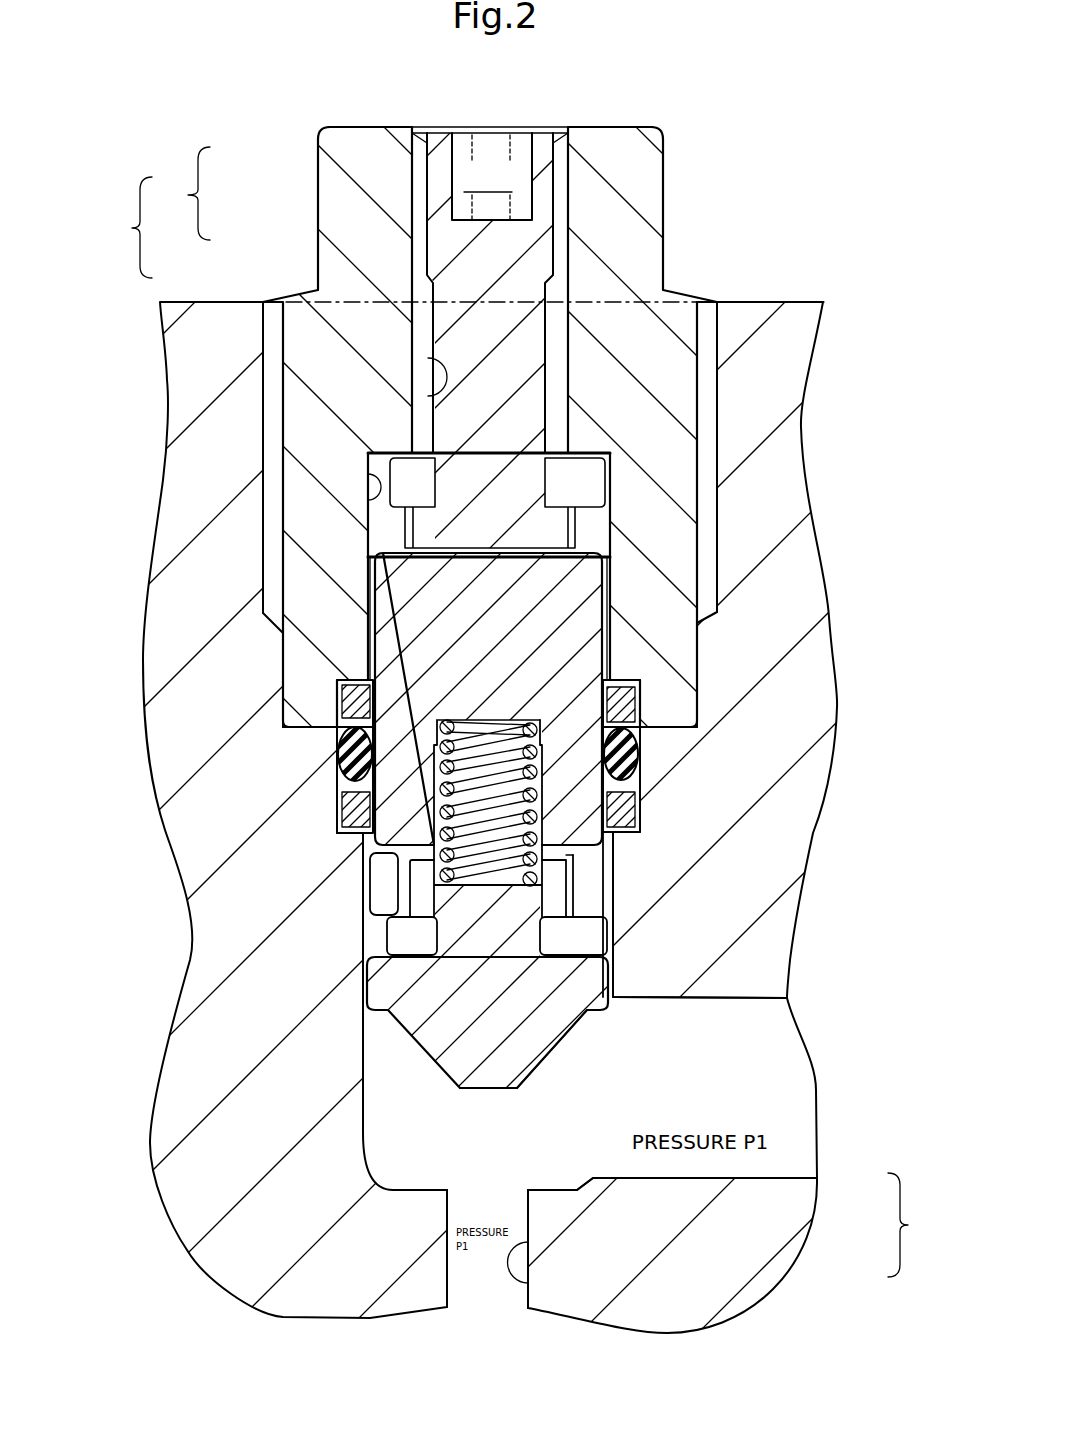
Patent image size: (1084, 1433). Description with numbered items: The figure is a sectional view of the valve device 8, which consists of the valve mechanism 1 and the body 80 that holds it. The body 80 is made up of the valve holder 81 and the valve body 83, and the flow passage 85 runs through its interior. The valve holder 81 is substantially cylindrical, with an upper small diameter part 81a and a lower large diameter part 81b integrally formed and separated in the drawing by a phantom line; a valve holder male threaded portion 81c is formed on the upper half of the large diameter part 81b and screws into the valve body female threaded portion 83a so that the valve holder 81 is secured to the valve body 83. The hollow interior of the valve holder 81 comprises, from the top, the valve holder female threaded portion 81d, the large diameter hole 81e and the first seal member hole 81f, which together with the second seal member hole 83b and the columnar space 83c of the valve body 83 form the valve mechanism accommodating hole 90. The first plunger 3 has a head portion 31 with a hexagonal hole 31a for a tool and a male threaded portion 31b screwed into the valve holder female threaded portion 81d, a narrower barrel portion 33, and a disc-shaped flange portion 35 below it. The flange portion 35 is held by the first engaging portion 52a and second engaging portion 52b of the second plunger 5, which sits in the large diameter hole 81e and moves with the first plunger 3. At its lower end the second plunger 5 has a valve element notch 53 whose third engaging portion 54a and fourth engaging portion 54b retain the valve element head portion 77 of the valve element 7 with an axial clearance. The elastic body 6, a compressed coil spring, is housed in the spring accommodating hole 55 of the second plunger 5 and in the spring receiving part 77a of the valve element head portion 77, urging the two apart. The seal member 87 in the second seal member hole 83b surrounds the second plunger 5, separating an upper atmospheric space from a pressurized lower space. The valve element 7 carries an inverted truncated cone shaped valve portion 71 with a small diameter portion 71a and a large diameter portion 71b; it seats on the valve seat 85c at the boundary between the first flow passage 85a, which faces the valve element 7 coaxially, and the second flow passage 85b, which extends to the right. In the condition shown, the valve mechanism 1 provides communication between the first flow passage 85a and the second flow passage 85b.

The valve mechanism 1 is at (497, 106).
The first plunger 3 is at (540, 143).
The second plunger 5 is at (547, 570).
The elastic body 6 is at (643, 797).
The valve element 7 is at (612, 983).
The valve device 8 is at (821, 117).
The head portion 31 is at (570, 155).
The hexagonal hole 31a is at (492, 176).
The male threaded portion 31b is at (562, 215).
The barrel portion 33 is at (527, 340).
The flange portion 35 is at (560, 480).
The first engaging portion 52a is at (617, 472).
The second engaging portion 52b is at (707, 567).
The valve element notch 53 is at (367, 883).
The third engaging portion 54a is at (643, 813).
The fourth engaging portion 54b is at (612, 943).
The spring accommodating hole 55 is at (353, 843).
The valve portion 71 is at (547, 1063).
The small diameter portion 71a is at (503, 1090).
The large diameter portion 71b is at (600, 1030).
The valve element head portion 77 is at (612, 887).
The spring receiving part 77a is at (612, 850).
The body 80 is at (122, 227).
The valve holder 81 is at (542, 716).
The small diameter part 81a is at (328, 210).
The large diameter part 81b is at (315, 345).
The valve holder male threaded portion 81c is at (273, 439).
The valve holder female threaded portion 81d is at (425, 398).
The large diameter hole 81e is at (366, 488).
The first seal member hole 81f is at (350, 676).
The valve body 83 is at (228, 327).
The valve body female threaded portion 83a is at (607, 527).
The second seal member hole 83b is at (342, 800).
The columnar space 83c is at (612, 917).
The flow passage 85 is at (670, 1225).
The first flow passage 85a is at (528, 1267).
The second flow passage 85b is at (787, 1145).
The valve seat 85c is at (453, 1180).
The seal member 87 is at (340, 757).
The valve mechanism accommodating hole 90 is at (387, 530).